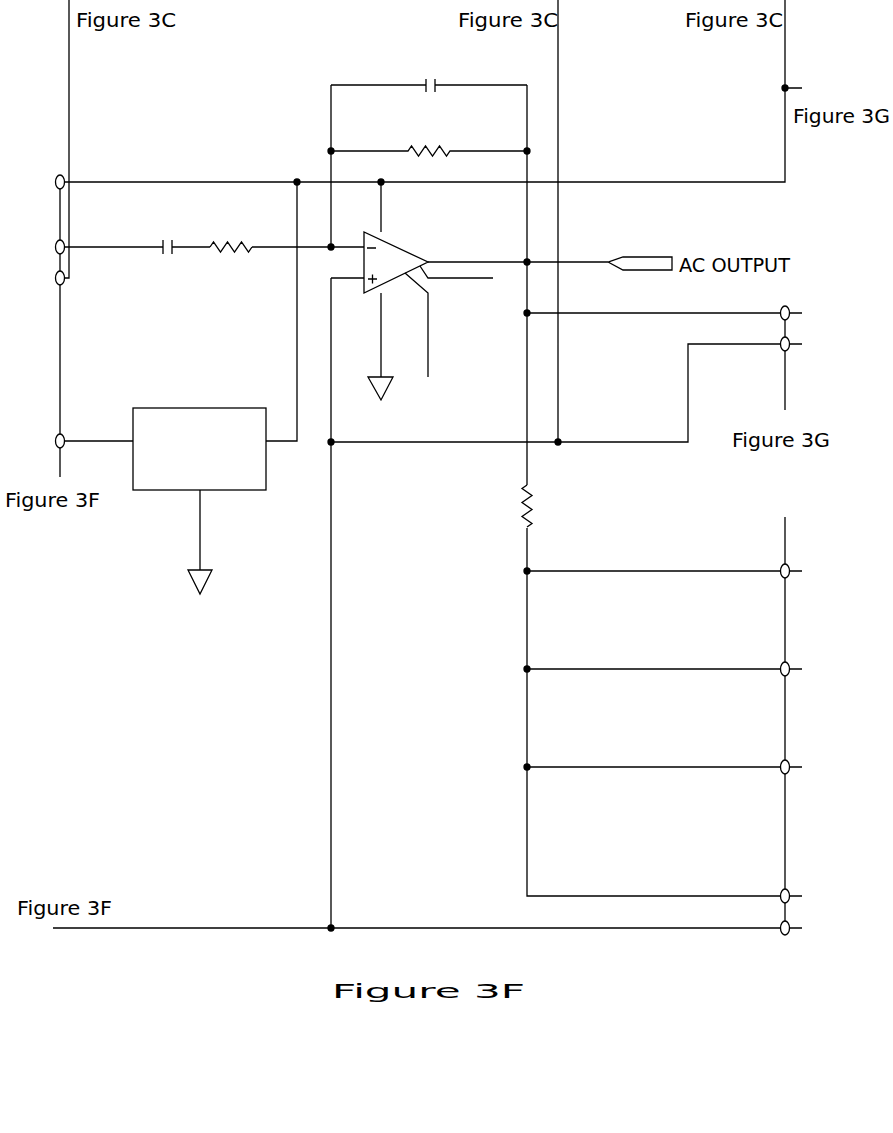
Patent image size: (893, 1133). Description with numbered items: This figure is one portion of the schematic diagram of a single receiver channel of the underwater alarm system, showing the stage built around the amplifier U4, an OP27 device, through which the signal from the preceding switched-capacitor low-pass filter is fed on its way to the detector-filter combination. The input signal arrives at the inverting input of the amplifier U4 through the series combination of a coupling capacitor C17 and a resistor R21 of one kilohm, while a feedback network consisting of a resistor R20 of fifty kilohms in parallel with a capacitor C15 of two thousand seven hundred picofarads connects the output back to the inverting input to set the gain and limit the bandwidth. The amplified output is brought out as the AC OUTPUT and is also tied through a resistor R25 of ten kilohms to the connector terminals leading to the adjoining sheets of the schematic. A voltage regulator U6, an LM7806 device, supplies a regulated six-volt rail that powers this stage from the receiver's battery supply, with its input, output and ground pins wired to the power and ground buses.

The capacitor 2700pF C15 is at (429, 86).
The resistor 50K R20 is at (429, 152).
The capacitor 1 C17 is at (166, 247).
The resistor 1K R21 is at (231, 247).
The amplifier U4 is at (430, 291).
The voltage regulator LM7806 U6 is at (201, 484).
The resistor 10K R25 is at (549, 508).